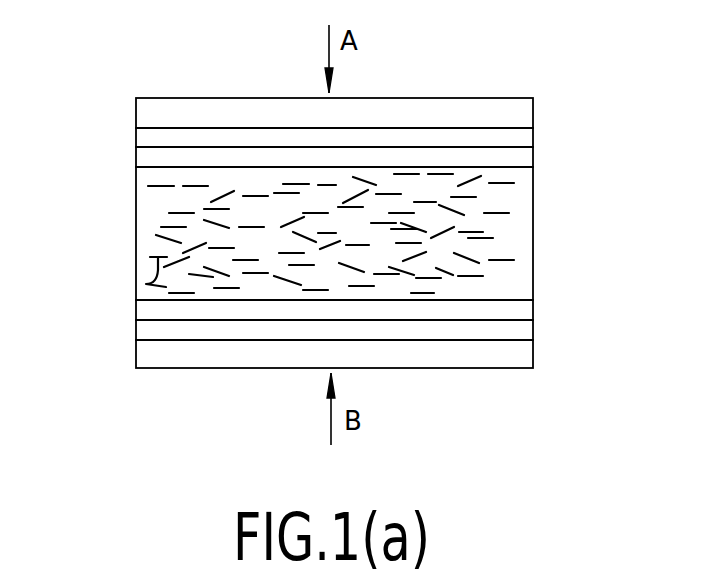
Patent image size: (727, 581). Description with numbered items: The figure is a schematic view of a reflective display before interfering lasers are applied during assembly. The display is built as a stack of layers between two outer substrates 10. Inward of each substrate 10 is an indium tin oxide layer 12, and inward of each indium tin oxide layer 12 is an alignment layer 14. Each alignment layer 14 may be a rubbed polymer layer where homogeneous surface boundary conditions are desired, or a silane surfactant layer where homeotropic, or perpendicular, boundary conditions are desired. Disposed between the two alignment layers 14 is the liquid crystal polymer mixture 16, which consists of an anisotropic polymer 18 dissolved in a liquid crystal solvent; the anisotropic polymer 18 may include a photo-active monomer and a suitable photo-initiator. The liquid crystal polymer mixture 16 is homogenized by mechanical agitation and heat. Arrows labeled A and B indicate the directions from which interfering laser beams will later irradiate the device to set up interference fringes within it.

The substrate 10 is at (152, 110).
The indium tin oxide layer 12 is at (517, 135).
The alignment layer 14 is at (137, 160).
The liquid crystal polymer mixture 16 is at (150, 218).
The anisotropic polymer 18 is at (146, 284).